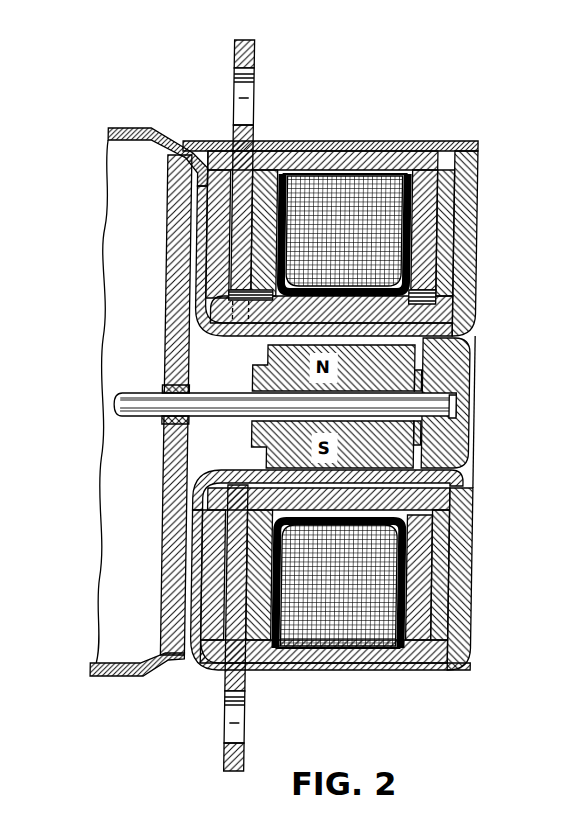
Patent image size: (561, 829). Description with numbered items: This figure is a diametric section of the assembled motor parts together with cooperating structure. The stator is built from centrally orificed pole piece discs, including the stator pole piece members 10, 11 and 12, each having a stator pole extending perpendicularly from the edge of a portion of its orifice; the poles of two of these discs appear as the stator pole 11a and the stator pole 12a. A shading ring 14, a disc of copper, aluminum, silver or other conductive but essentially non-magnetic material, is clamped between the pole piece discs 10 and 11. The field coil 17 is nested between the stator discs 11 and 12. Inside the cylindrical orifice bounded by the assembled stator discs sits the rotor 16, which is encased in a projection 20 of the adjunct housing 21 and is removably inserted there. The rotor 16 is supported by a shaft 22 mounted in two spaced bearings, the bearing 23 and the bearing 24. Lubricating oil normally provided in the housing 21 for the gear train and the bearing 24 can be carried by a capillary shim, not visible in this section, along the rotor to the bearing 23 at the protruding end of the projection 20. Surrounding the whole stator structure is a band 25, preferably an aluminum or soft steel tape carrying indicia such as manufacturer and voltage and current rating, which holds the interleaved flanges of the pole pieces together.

The stator pole piece member 10 is at (212, 152).
The stator pole piece member 11 is at (254, 162).
The stator pole 11a is at (385, 300).
The stator pole piece member 12 is at (472, 216).
The stator pole 12a is at (422, 490).
The shading ring 14 is at (236, 664).
The rotor 16 is at (407, 352).
The field coil 17 is at (400, 566).
The projection of the adjunct housing 20 is at (437, 463).
The adjunct housing 21 is at (103, 668).
The shaft 22 is at (437, 396).
The bearing 23 is at (435, 388).
The bearing 24 is at (154, 380).
The band 25 is at (348, 134).